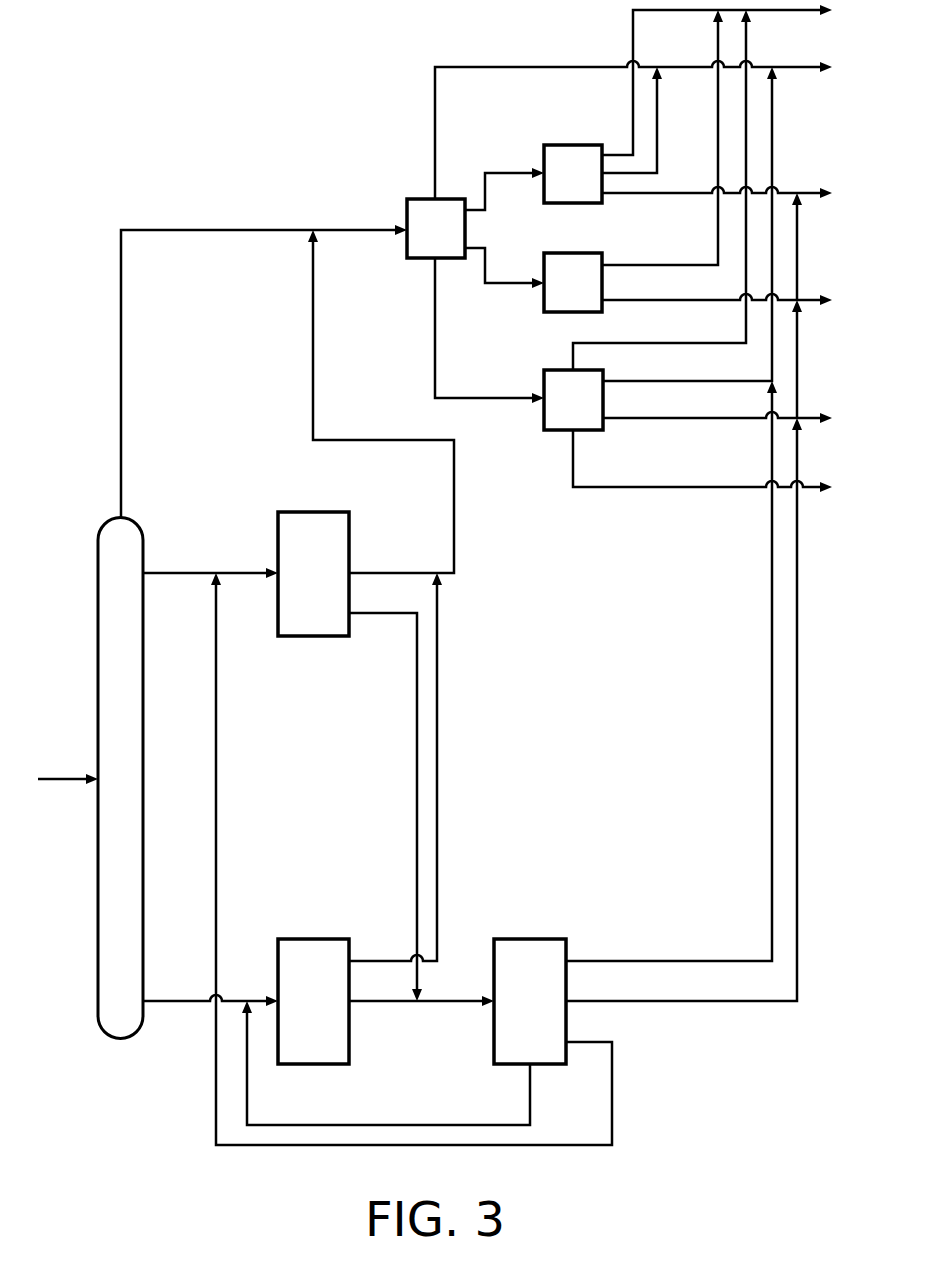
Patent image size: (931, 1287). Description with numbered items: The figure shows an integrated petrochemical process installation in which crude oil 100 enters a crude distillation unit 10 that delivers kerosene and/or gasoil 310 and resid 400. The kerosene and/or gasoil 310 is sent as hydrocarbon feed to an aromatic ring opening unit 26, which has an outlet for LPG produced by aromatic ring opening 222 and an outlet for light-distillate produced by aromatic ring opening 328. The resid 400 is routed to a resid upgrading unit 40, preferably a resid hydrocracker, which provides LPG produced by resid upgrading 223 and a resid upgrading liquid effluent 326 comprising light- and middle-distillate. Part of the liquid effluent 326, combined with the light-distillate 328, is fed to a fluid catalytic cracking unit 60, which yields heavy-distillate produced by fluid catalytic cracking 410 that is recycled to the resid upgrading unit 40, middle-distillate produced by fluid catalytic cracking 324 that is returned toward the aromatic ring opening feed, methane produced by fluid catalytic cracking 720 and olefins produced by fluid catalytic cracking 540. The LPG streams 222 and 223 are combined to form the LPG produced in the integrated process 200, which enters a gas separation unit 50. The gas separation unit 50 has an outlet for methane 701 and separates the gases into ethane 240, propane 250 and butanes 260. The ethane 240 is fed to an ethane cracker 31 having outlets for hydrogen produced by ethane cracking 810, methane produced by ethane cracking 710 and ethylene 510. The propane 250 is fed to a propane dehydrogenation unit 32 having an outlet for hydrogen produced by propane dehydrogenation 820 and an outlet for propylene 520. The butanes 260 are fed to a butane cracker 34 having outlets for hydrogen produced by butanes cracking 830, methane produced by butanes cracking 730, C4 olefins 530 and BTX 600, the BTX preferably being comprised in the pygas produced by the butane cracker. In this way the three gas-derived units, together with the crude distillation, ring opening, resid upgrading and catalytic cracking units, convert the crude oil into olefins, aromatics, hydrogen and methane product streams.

The crude distillation unit 10 is at (120, 778).
The crude oil 100 is at (62, 778).
The LPG produced in the integrated process 200 is at (362, 230).
The kerosene and/or gasoil produced by crude oil distillation unit 310 is at (178, 573).
The resid 400 is at (181, 1001).
The aromatic ring opening unit 26 is at (313, 574).
The LPG produced by aromatic ring opening 222 is at (386, 573).
The light-distillate produced by aromatic ring opening 328 is at (386, 613).
The resid upgrading unit 40 is at (313, 1001).
The LPG produced by resid upgrading 223 is at (378, 961).
The resid upgrading liquid effluent 326 is at (382, 1001).
The fluid catalytic cracking unit 60 is at (530, 1001).
The heavy-distillate produced by fluid catalytic cracking 410 is at (530, 1090).
The middle-distillate produced by fluid catalytic cracking 324 is at (588, 1046).
The methane produced by fluid catalytic cracking 720 is at (695, 961).
The olefins produced by fluid catalytic cracking 540 is at (695, 1001).
The gas separation unit 50 is at (436, 228).
The methane produced by gas separation 701 is at (510, 67).
The ethane 240 is at (506, 173).
The propane 250 is at (508, 283).
The butanes 260 is at (508, 398).
The ethane cracker 31 is at (573, 174).
The propane dehydrogenation unit 32 is at (573, 282).
The butane cracker 34 is at (573, 400).
The hydrogen produced by ethane cracking 810 is at (630, 88).
The methane produced by ethane cracking 710 is at (658, 162).
The ethylene produced by ethane cracking 510 is at (640, 195).
The hydrogen produced by propane dehydrogenation 820 is at (640, 265).
The propylene produced by propane dehydrogenation unit 520 is at (640, 300).
The hydrogen produced by butanes cracking 830 is at (640, 343).
The methane produced by butanes cracking 730 is at (640, 381).
The C4 olefins produced by butanes cracking 530 is at (684, 418).
The BTX 600 is at (684, 488).